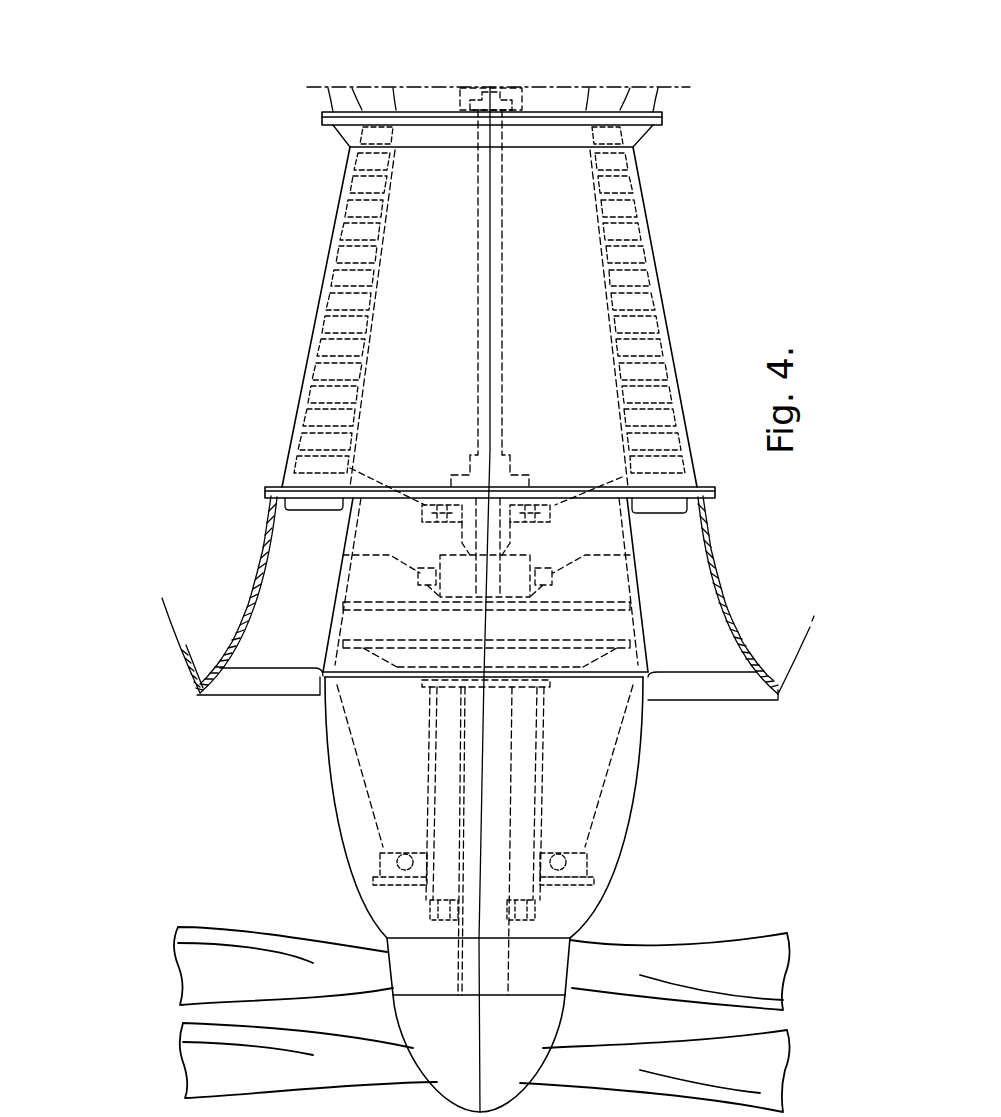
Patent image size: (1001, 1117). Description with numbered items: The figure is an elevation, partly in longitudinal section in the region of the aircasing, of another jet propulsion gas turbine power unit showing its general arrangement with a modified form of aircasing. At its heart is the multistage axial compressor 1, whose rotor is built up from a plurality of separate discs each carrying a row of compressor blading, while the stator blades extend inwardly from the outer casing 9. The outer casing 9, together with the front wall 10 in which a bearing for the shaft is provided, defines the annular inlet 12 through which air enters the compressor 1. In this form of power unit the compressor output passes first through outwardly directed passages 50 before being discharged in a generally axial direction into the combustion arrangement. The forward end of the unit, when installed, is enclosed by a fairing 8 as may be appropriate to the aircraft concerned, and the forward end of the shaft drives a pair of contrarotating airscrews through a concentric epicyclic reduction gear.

The outwardly directed passages 50 is at (356, 105).
The multistage axial compressor 1 is at (294, 286).
The outer casing 9 is at (330, 253).
The front wall 10 is at (552, 520).
The annular inlet 12 is at (306, 583).
The fairing 8 is at (183, 672).